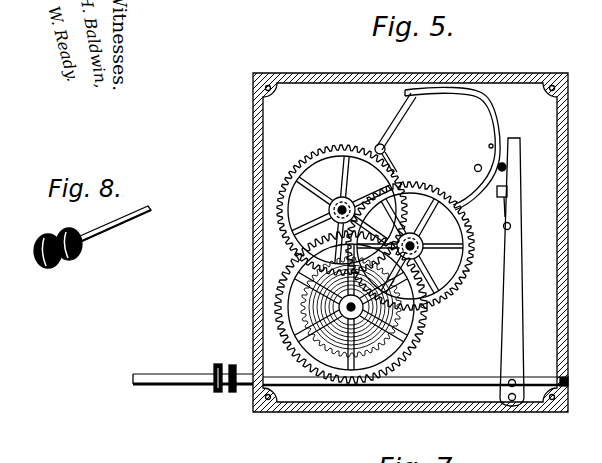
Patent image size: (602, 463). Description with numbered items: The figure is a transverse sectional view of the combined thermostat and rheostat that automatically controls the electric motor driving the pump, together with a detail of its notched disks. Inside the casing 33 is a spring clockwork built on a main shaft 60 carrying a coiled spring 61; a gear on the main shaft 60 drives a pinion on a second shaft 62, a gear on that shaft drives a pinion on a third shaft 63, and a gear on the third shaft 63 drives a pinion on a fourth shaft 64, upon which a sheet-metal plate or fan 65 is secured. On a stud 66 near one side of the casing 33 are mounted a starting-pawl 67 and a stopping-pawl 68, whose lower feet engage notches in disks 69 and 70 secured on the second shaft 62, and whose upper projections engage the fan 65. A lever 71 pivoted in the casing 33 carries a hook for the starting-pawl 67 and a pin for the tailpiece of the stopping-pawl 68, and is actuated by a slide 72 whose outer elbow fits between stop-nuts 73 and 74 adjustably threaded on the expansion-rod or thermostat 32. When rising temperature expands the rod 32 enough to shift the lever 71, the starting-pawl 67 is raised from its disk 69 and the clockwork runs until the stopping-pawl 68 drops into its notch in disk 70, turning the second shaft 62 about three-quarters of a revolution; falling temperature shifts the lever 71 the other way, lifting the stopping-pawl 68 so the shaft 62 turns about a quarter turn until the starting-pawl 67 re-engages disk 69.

In FIG. 5, the expansion-rod or thermostat 32 is at (138, 386).
In FIG. 5, the casing 33 is at (254, 128).
In FIG. 5, the main shaft 60 is at (340, 305).
In FIG. 5, the spring 61 is at (380, 340).
In FIG. 5, the second shaft 62 is at (440, 270).
In FIG. 8, the second shaft 62 is at (136, 226).
In FIG. 5, the third shaft 63 is at (330, 212).
In FIG. 5, the fourth shaft 64 is at (378, 144).
In FIG. 5, the sheet-metal plate or fan 65 is at (393, 140).
In FIG. 5, the stud 66 is at (506, 167).
In FIG. 5, the starting-pawl 67 is at (486, 120).
In FIG. 5, the stopping-pawl 68 is at (490, 114).
In FIG. 8, the disk 69 is at (54, 270).
In FIG. 8, the disk 70 is at (84, 256).
In FIG. 5, the lever 71 is at (518, 270).
In FIG. 5, the slide 72 is at (317, 427).
In FIG. 5, the stop-nut 73 is at (215, 392).
In FIG. 5, the stop-nut 74 is at (235, 393).